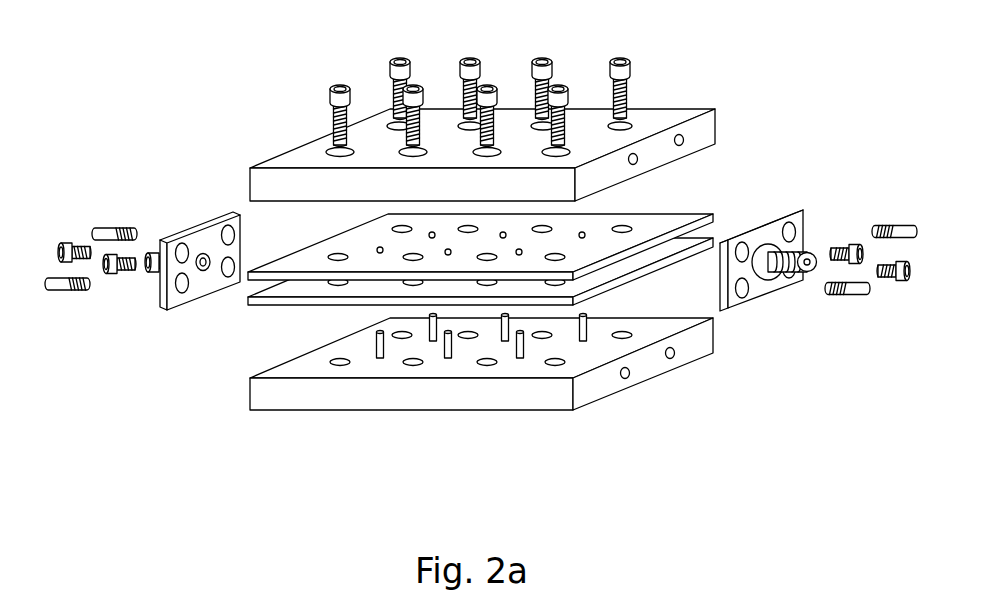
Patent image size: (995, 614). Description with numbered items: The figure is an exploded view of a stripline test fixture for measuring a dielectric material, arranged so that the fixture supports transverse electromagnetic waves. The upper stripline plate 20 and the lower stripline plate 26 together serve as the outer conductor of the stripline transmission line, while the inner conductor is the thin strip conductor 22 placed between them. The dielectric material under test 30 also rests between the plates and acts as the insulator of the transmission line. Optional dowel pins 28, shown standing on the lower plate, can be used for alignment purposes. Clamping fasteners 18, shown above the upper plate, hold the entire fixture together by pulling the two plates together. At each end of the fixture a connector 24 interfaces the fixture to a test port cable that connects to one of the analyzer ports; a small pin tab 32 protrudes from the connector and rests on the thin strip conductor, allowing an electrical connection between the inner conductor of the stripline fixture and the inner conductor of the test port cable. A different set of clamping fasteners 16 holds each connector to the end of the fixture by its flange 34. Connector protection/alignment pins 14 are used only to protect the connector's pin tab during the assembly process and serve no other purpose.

The connector protection/alignment pins 14 is at (103, 229).
The clamping fasteners 16 is at (60, 247).
The clamping fasteners 18 is at (397, 57).
The upper stripline plate 20 is at (670, 120).
The thin strip conductor 22 is at (650, 262).
The connector 24 is at (812, 272).
The lower stripline plate 26 is at (605, 385).
The dowel pins 28 is at (377, 347).
The dielectric material under test 30 is at (248, 297).
The pin tab 32 is at (215, 261).
The flange 34 is at (208, 213).